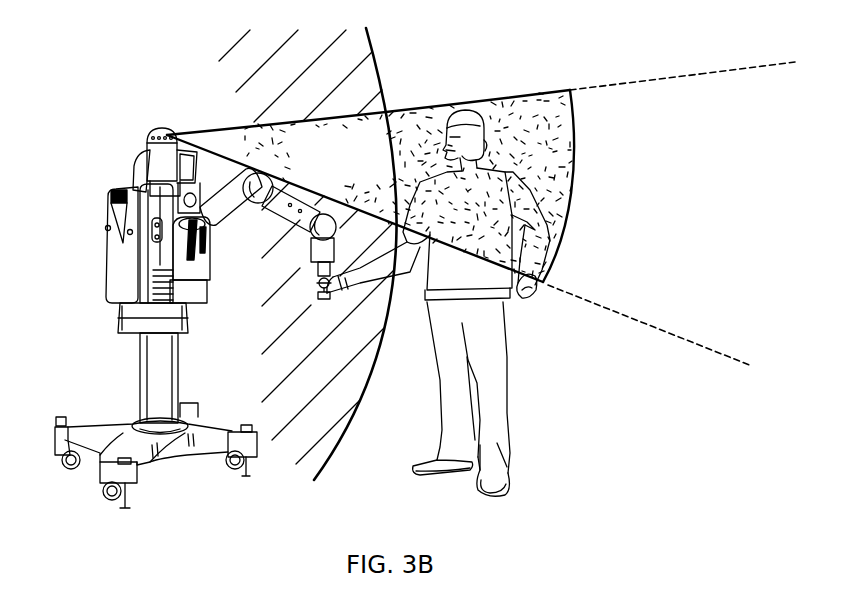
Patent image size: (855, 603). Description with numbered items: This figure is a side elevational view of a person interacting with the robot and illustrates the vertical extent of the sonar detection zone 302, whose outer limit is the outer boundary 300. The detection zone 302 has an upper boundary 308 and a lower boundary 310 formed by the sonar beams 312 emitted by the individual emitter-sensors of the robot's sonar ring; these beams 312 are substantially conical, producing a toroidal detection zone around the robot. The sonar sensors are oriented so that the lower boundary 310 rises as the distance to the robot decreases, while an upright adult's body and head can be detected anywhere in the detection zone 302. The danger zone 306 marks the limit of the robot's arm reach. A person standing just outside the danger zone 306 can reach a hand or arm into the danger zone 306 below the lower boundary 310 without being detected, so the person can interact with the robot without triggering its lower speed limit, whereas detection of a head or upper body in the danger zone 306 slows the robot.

The outer boundary 300 is at (572, 192).
The detection zone 302 is at (502, 110).
The danger zone 306 is at (322, 452).
The upper boundary 308 is at (663, 78).
The lower boundary 310 is at (512, 275).
The sonar beams 312 is at (745, 88).